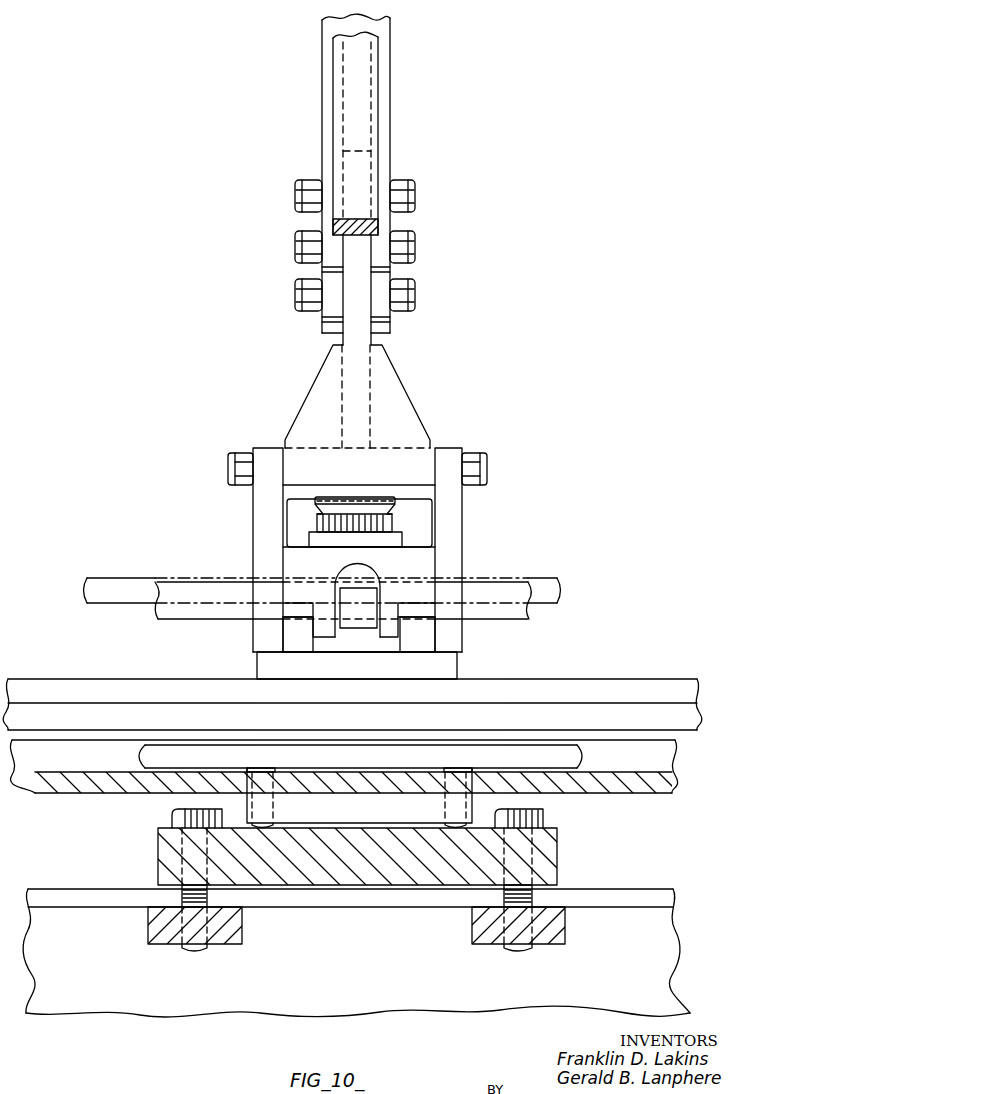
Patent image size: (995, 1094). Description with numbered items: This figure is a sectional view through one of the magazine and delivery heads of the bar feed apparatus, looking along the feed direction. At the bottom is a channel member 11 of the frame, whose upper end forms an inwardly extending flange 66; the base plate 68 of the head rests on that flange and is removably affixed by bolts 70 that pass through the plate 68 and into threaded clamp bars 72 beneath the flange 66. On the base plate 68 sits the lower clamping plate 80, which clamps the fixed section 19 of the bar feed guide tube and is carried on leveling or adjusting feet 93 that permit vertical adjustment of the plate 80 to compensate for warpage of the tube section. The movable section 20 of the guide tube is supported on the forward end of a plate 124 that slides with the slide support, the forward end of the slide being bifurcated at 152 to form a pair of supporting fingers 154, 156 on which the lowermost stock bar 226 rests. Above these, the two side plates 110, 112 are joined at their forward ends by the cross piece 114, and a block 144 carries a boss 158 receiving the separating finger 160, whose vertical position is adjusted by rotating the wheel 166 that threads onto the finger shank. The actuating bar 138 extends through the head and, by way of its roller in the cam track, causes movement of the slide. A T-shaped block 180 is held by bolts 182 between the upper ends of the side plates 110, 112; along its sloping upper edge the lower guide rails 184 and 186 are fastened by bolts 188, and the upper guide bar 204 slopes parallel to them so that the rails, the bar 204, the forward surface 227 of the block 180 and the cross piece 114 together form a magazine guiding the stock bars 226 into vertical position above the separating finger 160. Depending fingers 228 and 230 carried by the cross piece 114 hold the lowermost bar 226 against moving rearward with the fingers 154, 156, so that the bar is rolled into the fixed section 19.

The channel member 11 is at (356, 953).
The fixed section 19 is at (619, 794).
The movable section 20 is at (527, 679).
The flange 66 is at (628, 890).
The base plate 68 is at (557, 863).
The bolt 70 is at (172, 820).
The clamp bar 72 is at (242, 927).
The lower clamping plate 80 is at (359, 795).
The leveling foot 93 is at (253, 823).
The side plate 110 is at (464, 531).
The side plate 112 is at (254, 527).
The cross piece 114 is at (359, 589).
The plate 124 is at (357, 667).
The actuating bar 138 is at (505, 582).
The block 144 is at (358, 523).
The bifurcation 152 is at (357, 644).
The supporting finger 154 is at (302, 635).
The supporting finger 156 is at (420, 635).
The boss 158 is at (396, 533).
The separating finger 160 is at (359, 607).
The wheel 166 is at (388, 497).
The T-shaped block 180 is at (375, 386).
The bolt 182 is at (482, 451).
The lower guide rail 184 is at (390, 138).
The lower guide rail 186 is at (332, 133).
The bolt 188 is at (415, 192).
The upper guide bar 204 is at (381, 93).
The stock bar 226 is at (108, 578).
The forward surface 227 is at (416, 413).
The depending finger 228 is at (393, 612).
The depending finger 230 is at (325, 612).